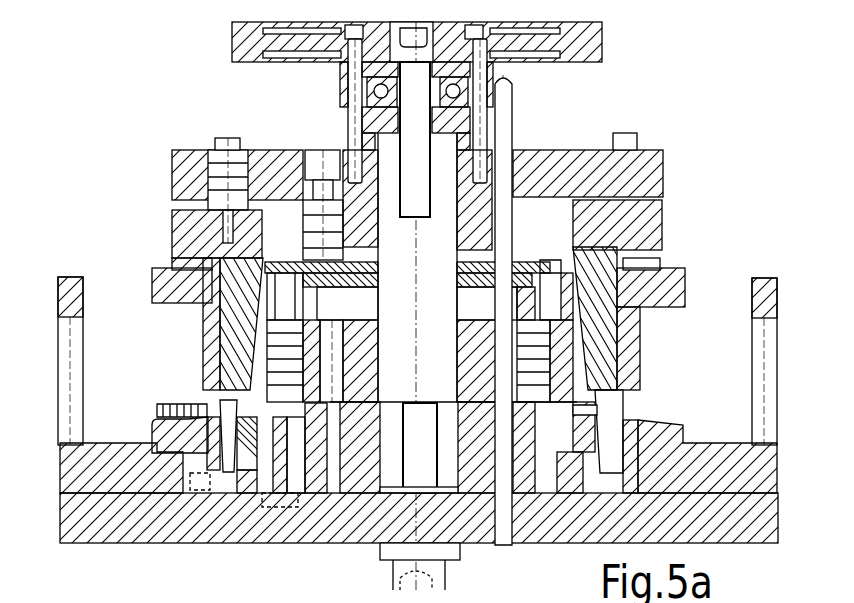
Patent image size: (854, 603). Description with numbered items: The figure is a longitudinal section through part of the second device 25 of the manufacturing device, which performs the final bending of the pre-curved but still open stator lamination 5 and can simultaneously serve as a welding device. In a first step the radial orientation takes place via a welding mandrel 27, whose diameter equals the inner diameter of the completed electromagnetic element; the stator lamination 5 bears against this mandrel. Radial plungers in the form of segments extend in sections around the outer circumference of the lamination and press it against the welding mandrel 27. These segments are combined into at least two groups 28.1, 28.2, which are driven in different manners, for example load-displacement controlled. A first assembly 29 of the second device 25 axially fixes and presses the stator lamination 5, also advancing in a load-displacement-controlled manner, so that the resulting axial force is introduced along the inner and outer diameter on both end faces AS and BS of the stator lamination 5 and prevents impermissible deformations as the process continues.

The stator lamination 5 is at (247, 353).
The second device 25 is at (657, 232).
The welding mandrel 27 is at (668, 262).
The first group of segments 28.1 is at (228, 307).
The second group of segments 28.2 is at (598, 350).
The first assembly 29 is at (537, 258).
The end face AS is at (290, 262).
The end face BS is at (273, 463).